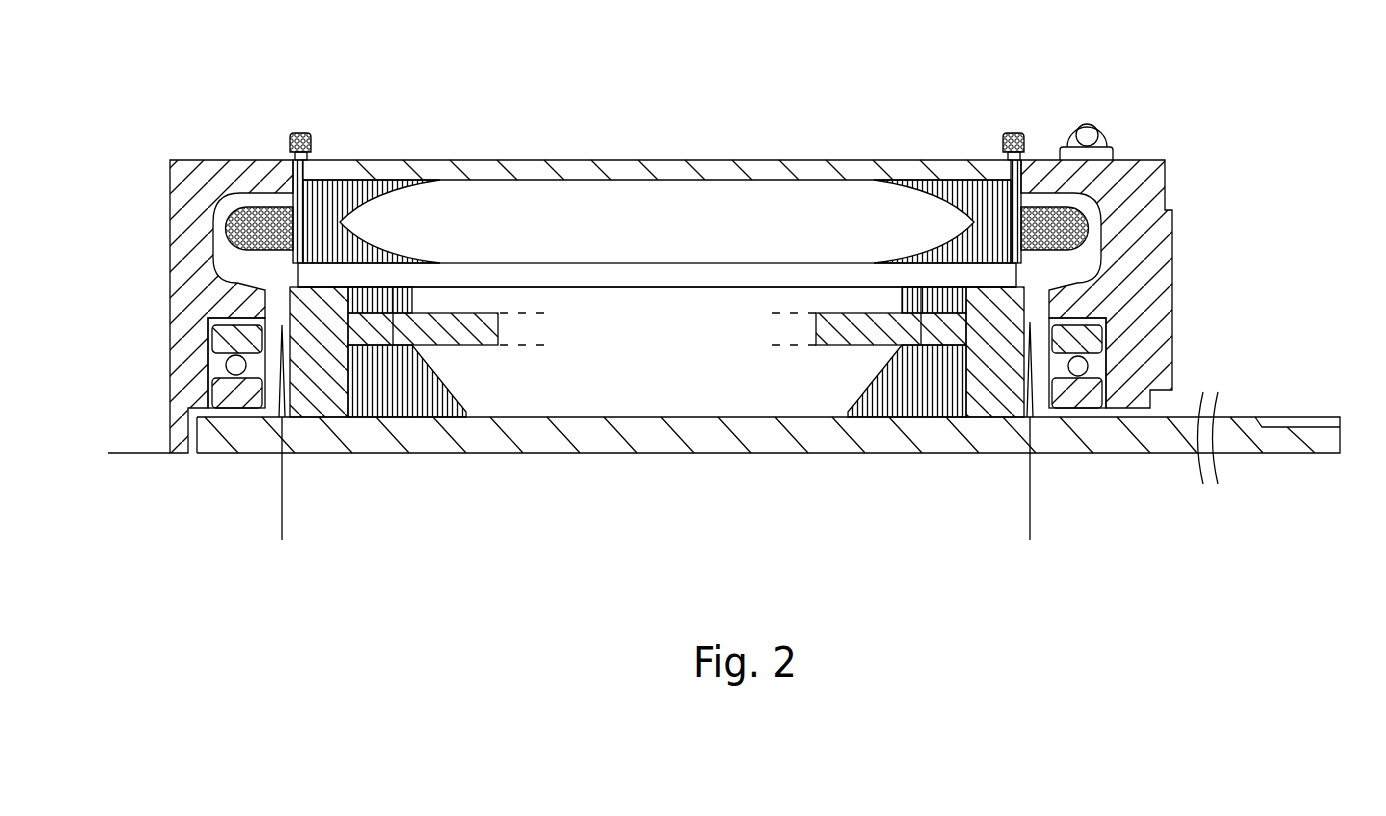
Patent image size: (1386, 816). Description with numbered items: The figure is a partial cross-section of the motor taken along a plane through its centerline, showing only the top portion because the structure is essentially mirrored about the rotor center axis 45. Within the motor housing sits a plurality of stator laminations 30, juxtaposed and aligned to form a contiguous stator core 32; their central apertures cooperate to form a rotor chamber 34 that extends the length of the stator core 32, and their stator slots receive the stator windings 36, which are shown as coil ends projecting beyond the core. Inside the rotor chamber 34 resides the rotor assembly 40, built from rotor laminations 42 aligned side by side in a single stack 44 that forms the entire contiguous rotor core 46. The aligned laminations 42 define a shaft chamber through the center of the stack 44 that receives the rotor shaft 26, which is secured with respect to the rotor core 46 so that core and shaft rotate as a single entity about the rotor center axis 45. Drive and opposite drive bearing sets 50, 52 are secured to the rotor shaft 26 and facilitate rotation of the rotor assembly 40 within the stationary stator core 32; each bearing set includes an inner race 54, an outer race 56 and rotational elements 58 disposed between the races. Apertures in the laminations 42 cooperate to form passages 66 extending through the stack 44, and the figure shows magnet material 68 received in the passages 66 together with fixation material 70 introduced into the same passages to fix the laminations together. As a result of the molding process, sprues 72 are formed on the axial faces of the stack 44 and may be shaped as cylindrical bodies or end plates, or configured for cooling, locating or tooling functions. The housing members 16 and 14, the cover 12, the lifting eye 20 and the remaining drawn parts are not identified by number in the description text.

The cover plate 12 is at (417, 158).
The second housing member 14 is at (1166, 165).
The first housing member 16 is at (186, 160).
The lifting eye 20 is at (1106, 140).
The rotor shaft 26 is at (1348, 430).
The stator laminations 30 is at (356, 180).
The stator core 32 is at (733, 210).
The rotor chamber 34 is at (1003, 273).
The stator windings 36 is at (1038, 413).
The rotor assembly 40 is at (723, 363).
The rotor laminations 42 is at (383, 500).
The stack 44 is at (530, 413).
The rotor center axis 45 is at (110, 455).
The rotor core 46 is at (658, 285).
The drive bearing set 50 is at (210, 398).
The opposite drive bearing set 52 is at (1107, 390).
The inner race 54 is at (222, 423).
The outer race 56 is at (208, 318).
The rotational elements 58 is at (228, 366).
The passages 66 is at (525, 313).
The magnet material 68 is at (473, 313).
The fixation material 70 is at (303, 403).
The sprues 72 is at (652, 447).